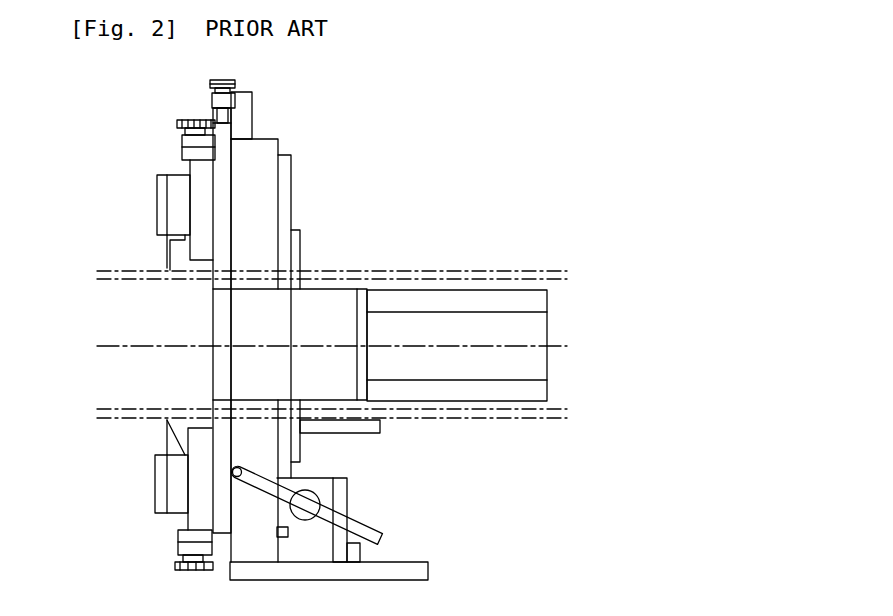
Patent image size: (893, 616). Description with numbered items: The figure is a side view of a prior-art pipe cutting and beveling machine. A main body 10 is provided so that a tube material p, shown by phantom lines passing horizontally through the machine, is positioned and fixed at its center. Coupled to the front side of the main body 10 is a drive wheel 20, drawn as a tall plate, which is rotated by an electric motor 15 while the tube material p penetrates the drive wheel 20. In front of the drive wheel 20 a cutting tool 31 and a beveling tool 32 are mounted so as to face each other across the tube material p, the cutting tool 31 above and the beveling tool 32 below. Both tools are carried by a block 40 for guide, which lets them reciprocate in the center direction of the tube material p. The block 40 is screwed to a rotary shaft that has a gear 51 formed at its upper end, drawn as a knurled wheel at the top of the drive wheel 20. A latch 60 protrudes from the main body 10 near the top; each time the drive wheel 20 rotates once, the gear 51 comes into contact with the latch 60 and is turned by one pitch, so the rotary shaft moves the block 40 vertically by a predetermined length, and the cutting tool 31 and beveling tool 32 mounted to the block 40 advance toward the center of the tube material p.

The main body 10 is at (263, 166).
The electric motor 15 is at (438, 373).
The drive wheel 20 is at (222, 202).
The cutting tool 31 is at (170, 258).
The beveling tool 32 is at (168, 438).
The block 40 is at (162, 192).
The gear 51 is at (178, 123).
The latch 60 is at (217, 113).
The tube material p is at (345, 275).